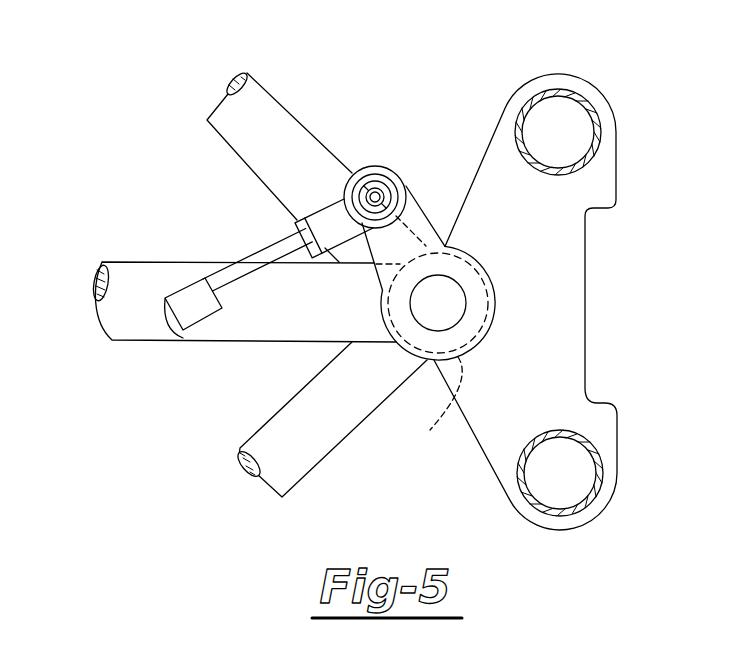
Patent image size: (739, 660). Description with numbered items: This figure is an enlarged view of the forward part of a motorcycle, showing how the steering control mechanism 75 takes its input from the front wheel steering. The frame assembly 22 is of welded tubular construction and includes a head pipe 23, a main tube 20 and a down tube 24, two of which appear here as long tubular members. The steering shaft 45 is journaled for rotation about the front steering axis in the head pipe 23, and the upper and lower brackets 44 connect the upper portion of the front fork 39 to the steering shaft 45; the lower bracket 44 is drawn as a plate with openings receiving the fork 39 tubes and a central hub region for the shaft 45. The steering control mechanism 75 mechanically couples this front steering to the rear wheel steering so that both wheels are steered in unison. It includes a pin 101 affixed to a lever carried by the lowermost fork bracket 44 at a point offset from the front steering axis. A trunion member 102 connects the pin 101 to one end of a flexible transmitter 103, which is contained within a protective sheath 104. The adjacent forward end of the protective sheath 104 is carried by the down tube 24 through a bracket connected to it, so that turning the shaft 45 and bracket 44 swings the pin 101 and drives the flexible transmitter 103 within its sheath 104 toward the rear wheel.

The main tube 20 is at (223, 332).
The frame assembly 22 is at (149, 347).
The head pipe 23 is at (443, 403).
The down tube 24 is at (262, 98).
The front fork 39 is at (602, 122).
The upper and lower brackets 44 is at (565, 325).
The steering shaft 45 is at (456, 292).
The steering control mechanism 75 is at (187, 241).
The pin 101 is at (377, 200).
The trunion member 102 is at (414, 206).
The flexible transmitter 103 is at (253, 253).
The protective sheath 104 is at (178, 292).